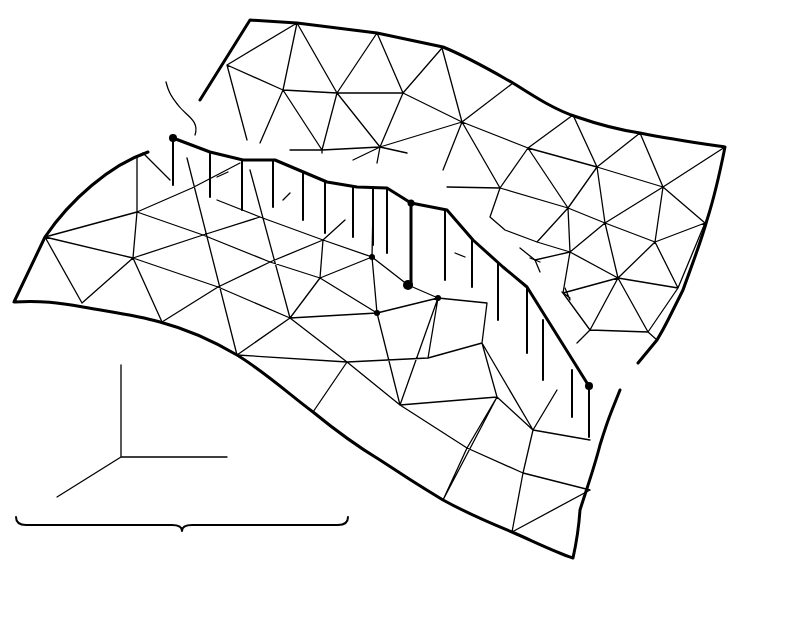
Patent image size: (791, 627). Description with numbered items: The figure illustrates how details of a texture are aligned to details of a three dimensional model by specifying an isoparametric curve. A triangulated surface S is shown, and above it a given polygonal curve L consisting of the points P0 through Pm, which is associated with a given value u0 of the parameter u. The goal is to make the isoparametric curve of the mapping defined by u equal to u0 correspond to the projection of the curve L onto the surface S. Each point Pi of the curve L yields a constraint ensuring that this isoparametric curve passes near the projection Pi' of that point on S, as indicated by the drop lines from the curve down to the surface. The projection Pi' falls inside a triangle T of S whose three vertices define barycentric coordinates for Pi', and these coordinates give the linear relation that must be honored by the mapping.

The surface S is at (598, 463).
The polygonal curve L is at (165, 75).
The first point of polygonal curve P0 is at (155, 134).
The point of polygonal curve Pi is at (412, 229).
The projection of point on surface Pi' is at (418, 281).
The last point of polygonal curve Pm is at (602, 397).